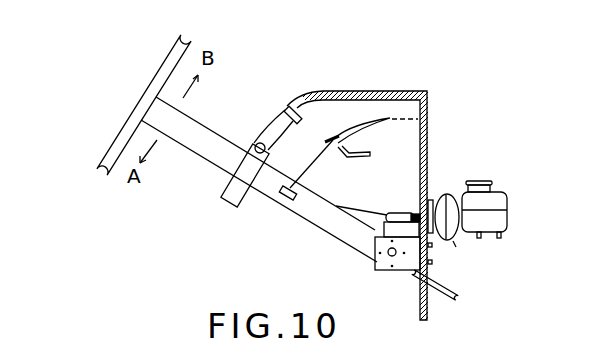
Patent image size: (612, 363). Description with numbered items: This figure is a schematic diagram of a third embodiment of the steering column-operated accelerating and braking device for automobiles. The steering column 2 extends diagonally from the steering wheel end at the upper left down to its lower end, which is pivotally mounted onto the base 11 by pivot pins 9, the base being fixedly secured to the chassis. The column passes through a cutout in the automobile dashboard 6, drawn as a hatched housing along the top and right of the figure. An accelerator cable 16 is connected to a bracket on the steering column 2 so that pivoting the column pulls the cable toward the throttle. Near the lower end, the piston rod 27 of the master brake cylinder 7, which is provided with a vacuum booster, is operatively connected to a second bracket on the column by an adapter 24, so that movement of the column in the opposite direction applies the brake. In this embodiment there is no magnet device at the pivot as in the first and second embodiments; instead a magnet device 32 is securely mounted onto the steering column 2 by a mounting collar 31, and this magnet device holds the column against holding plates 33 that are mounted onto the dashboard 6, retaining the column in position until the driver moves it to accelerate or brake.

The steering column 2 is at (191, 148).
The automobile dashboard 6 is at (366, 90).
The master brake cylinder 7 is at (500, 218).
The pivot pin 9 is at (392, 256).
The base 11 is at (398, 271).
The accelerator cable 16 is at (312, 172).
The adapter 24 is at (400, 215).
The piston rod 27 is at (417, 214).
The mounting collar 31 is at (249, 150).
The magnet device 32 is at (264, 126).
The holding plates 33 is at (233, 208).